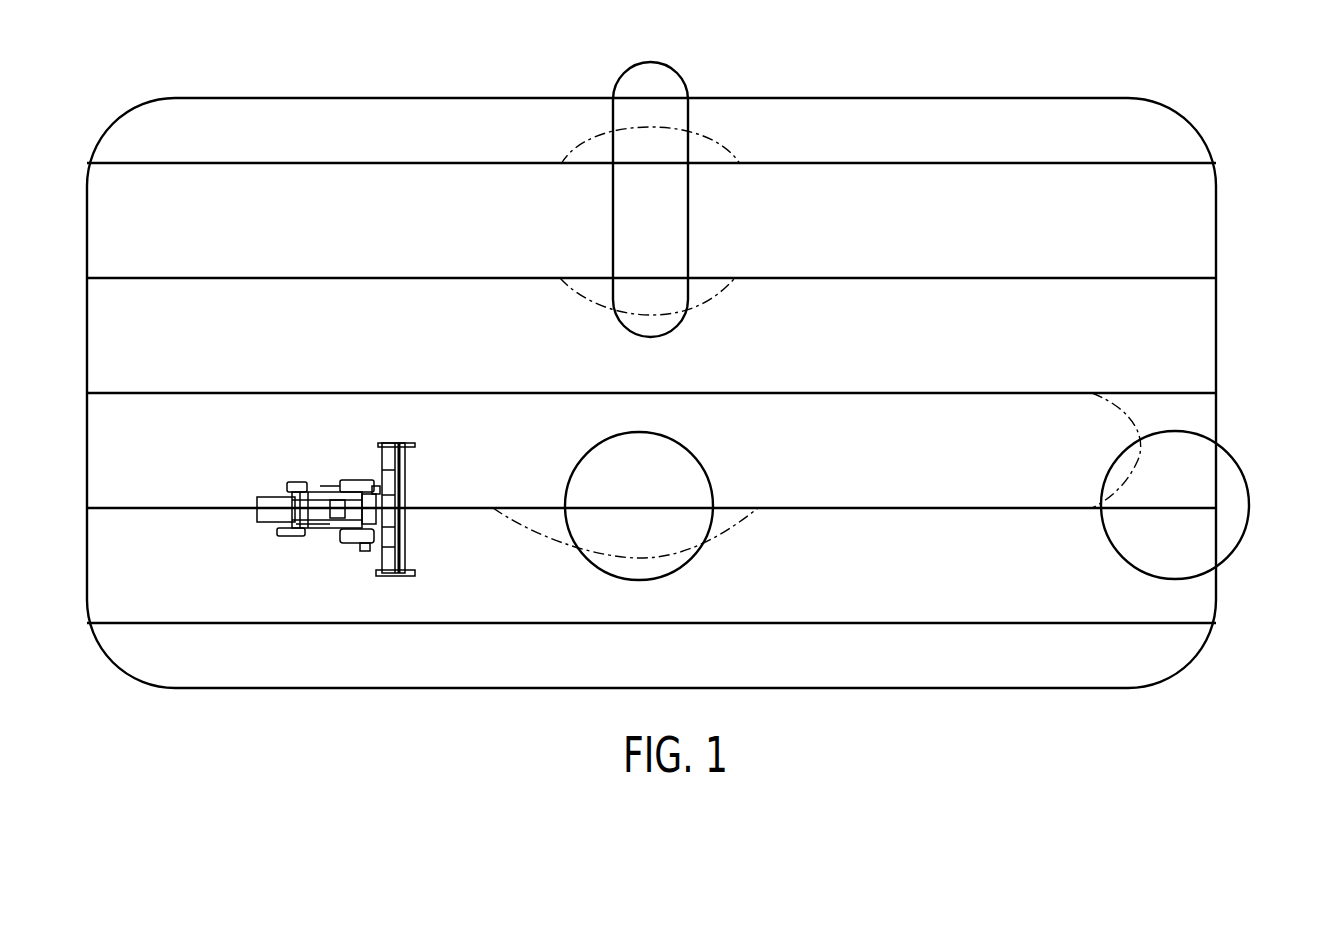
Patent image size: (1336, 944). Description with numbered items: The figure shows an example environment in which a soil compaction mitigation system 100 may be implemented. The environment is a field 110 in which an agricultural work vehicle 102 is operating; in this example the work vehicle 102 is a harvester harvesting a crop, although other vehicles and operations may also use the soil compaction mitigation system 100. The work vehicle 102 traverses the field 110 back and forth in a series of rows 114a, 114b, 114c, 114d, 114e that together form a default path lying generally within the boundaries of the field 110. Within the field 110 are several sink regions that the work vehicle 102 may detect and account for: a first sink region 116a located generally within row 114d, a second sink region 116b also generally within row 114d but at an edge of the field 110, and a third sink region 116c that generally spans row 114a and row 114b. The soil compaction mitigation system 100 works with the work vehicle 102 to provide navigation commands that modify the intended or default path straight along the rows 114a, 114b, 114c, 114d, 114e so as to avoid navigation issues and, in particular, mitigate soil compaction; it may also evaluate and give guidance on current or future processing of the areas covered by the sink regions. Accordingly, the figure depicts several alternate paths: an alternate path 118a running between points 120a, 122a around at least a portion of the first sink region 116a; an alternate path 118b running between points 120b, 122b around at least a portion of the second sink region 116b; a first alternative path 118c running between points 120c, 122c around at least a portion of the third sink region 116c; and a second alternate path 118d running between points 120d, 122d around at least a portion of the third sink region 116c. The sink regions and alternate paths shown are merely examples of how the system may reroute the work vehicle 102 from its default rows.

The soil compaction mitigation system 100 is at (337, 502).
The agricultural work vehicle 102 is at (386, 442).
The field 110 is at (777, 66).
The row 114a is at (118, 163).
The row 114b is at (118, 278).
The row 114c is at (118, 393).
The row 114d is at (118, 508).
The row 114e is at (118, 623).
The first sink region 116a is at (588, 452).
The second sink region 116b is at (1227, 450).
The third sink region 116c is at (641, 62).
The alternate path 118a is at (733, 530).
The alternate path 118b is at (1125, 413).
The first alternative path 118c is at (585, 298).
The second alternate path 118d is at (578, 148).
The point 120a is at (493, 507).
The point 120b is at (1088, 507).
The point 120c is at (735, 280).
The point 120d is at (561, 164).
The point 122a is at (758, 508).
The point 122b is at (1085, 393).
The point 122c is at (562, 280).
The point 122d is at (738, 164).